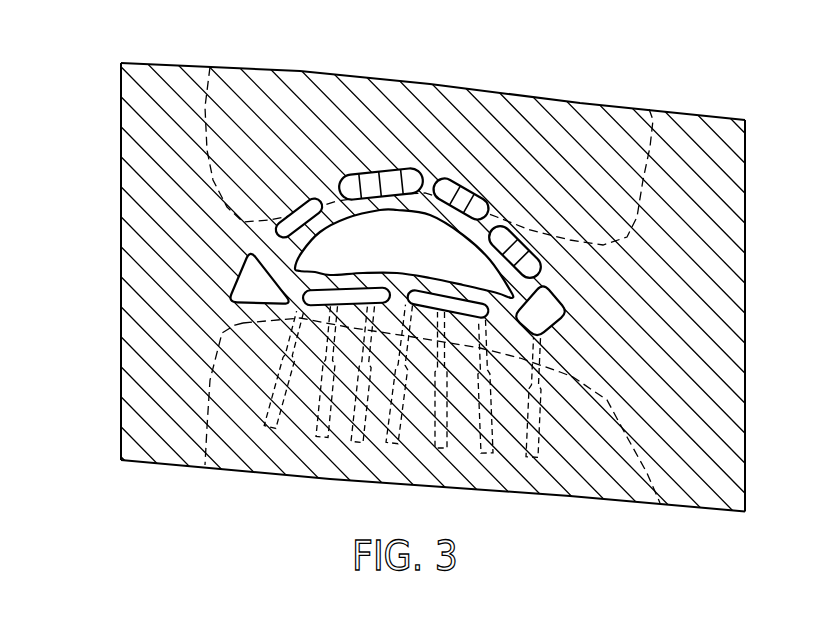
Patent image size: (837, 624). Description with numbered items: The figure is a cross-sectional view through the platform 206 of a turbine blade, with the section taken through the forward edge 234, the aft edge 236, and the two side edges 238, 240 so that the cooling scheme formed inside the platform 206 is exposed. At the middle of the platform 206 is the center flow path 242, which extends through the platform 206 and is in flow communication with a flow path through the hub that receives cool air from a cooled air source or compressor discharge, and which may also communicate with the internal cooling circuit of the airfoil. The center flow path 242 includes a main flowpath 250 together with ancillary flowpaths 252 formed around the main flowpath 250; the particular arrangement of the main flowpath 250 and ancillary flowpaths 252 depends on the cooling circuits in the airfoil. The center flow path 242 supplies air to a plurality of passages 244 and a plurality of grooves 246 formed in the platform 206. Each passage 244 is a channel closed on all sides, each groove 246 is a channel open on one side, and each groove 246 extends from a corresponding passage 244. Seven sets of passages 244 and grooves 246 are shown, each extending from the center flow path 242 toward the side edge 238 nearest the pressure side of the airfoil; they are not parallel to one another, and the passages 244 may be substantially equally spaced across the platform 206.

The platform 206 is at (682, 165).
The forward edge 234 is at (120, 302).
The aft edge 236 is at (746, 355).
The side edge 238 is at (548, 496).
The side edge 240 is at (546, 98).
The center flow path 242 is at (499, 209).
The passages 244 is at (243, 323).
The grooves 246 is at (546, 436).
The main flowpath 250 is at (410, 227).
The ancillary flowpaths 252 is at (300, 211).